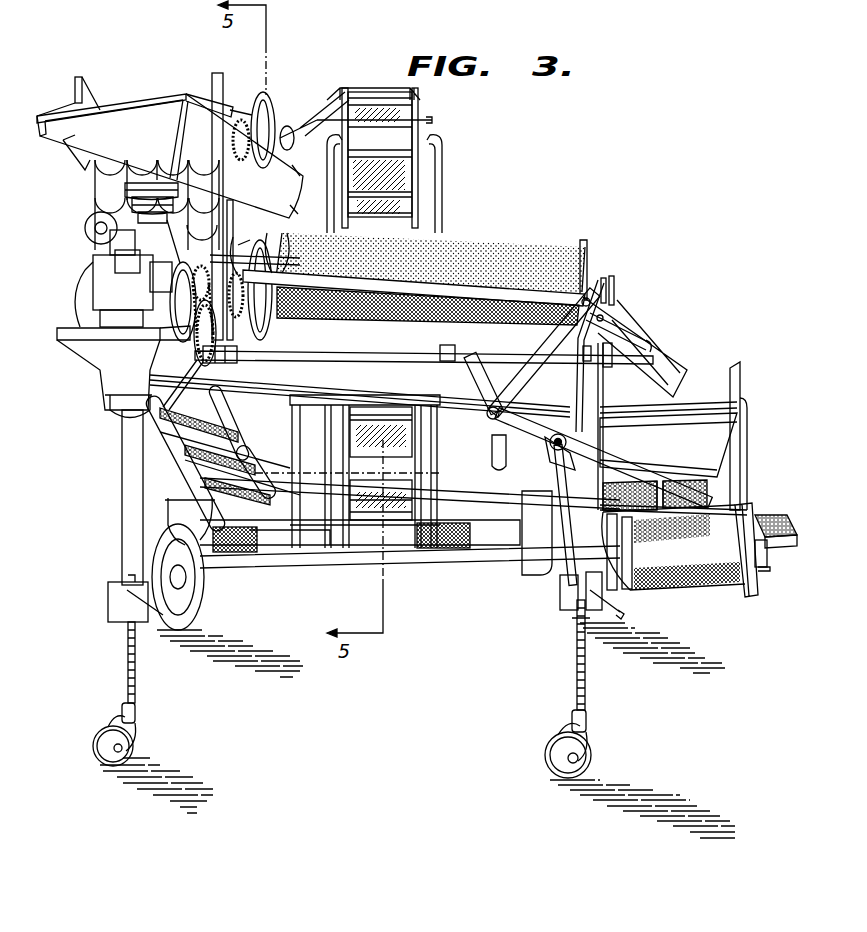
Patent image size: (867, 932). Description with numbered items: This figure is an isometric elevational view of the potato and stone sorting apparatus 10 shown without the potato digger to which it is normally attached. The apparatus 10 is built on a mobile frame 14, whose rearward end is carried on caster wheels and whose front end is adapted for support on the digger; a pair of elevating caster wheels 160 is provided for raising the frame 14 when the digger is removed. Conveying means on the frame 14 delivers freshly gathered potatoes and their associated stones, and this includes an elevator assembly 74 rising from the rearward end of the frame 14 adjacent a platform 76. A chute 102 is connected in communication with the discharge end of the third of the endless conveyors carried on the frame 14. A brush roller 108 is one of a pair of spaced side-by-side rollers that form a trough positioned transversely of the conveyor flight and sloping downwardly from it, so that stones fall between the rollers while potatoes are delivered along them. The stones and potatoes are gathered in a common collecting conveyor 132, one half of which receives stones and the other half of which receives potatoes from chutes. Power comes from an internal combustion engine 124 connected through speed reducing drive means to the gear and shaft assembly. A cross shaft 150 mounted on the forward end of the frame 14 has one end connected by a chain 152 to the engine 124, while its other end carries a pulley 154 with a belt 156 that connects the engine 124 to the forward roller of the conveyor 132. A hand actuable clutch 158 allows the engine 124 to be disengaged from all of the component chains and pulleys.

The apparatus 10 is at (286, 572).
The mobile frame 14 is at (463, 482).
The elevator assembly 74 is at (405, 137).
The platform 76 is at (487, 537).
The chute 102 is at (152, 139).
The brush roller 108 is at (506, 272).
The internal combustion engine 124 is at (108, 273).
The conveyor 132 is at (697, 566).
The cross shaft 150 is at (355, 356).
The chain 152 is at (190, 329).
The pulley 154 is at (607, 347).
The belt 156 is at (673, 438).
The hand actuable clutch 158 is at (172, 378).
The elevating caster wheels 160 is at (590, 752).